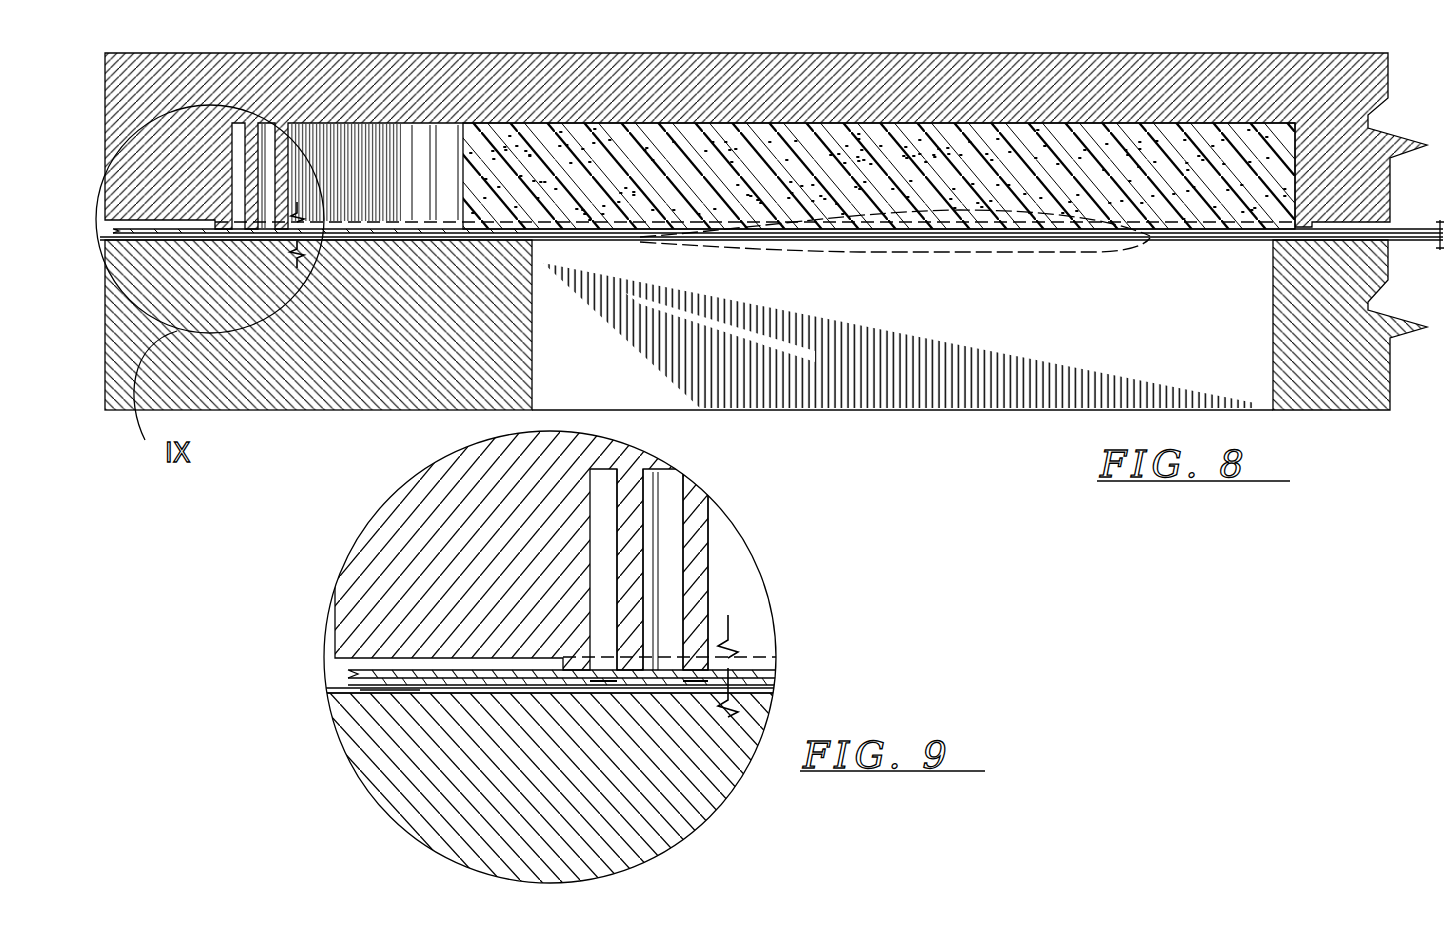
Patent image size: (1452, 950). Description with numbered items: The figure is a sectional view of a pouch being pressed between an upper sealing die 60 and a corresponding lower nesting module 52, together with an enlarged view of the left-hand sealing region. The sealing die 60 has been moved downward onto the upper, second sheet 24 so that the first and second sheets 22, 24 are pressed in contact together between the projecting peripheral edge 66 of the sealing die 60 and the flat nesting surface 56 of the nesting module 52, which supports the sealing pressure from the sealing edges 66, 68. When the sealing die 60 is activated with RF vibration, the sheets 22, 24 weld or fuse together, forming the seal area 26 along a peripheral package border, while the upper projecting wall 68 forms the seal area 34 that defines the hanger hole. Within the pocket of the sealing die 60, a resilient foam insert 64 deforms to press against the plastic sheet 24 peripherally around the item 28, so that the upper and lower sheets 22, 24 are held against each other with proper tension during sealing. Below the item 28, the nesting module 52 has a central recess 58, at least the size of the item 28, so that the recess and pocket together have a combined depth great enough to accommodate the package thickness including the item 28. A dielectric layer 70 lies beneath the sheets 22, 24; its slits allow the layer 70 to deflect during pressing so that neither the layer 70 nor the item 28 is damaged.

In FIG. 8, the first sheet 22 is at (1393, 234).
In FIG. 9, the first sheet 22 is at (345, 683).
In FIG. 8, the second sheet 24 is at (1393, 228).
In FIG. 9, the second sheet 24 is at (347, 674).
In FIG. 9, the seal area 26 is at (572, 686).
In FIG. 8, the item 28 is at (953, 214).
In FIG. 9, the seal area 34 is at (696, 682).
In FIG. 8, the nesting module 52 is at (314, 358).
In FIG. 9, the nesting surface 56 is at (392, 697).
In FIG. 8, the central recess 58 is at (947, 320).
In FIG. 8, the sealing die 60 is at (912, 57).
In FIG. 8, the foam insert 64 is at (653, 143).
In FIG. 9, the peripheral projecting edge 66 is at (573, 668).
In FIG. 9, the upper projecting wall 68 is at (693, 594).
In FIG. 8, the dielectric layer 70 is at (1393, 241).
In FIG. 9, the dielectric layer 70 is at (323, 693).